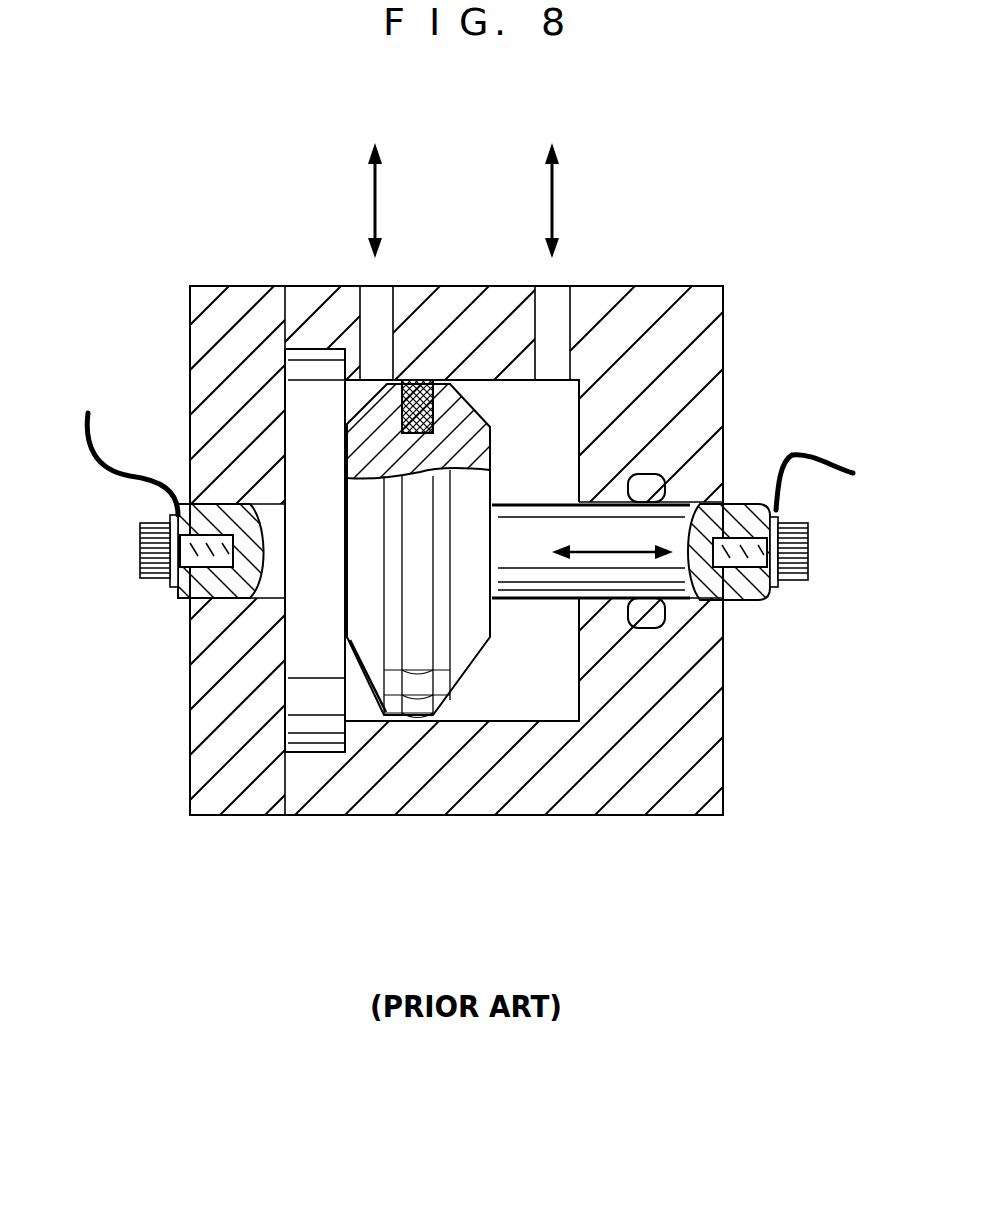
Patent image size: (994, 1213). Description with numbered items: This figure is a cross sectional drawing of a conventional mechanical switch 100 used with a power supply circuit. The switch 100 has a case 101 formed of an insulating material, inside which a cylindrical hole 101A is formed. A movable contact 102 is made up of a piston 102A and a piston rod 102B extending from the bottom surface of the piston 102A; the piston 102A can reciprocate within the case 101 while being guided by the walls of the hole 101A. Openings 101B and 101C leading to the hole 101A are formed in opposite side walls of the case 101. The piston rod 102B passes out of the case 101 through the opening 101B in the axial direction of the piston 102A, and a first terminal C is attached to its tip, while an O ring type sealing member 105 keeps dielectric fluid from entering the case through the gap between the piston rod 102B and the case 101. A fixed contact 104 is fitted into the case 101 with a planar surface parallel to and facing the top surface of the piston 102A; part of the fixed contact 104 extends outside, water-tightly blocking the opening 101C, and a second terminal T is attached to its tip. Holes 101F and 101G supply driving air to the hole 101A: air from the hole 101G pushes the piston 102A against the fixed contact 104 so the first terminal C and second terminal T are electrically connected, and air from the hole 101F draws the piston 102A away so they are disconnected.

The switch 100 is at (705, 249).
The case 101 is at (321, 299).
The cylindrical hole 101A is at (549, 687).
The opening 101B is at (727, 604).
The opening 101C is at (185, 597).
The hole 101F is at (379, 286).
The hole 101G is at (552, 287).
The movable contact 102 is at (484, 642).
The piston 102A is at (370, 703).
The piston rod 102B is at (741, 503).
The fixed contact 104 is at (300, 573).
The O ring type sealing member 105 is at (647, 633).
The second terminal T is at (107, 552).
The first terminal C is at (841, 554).